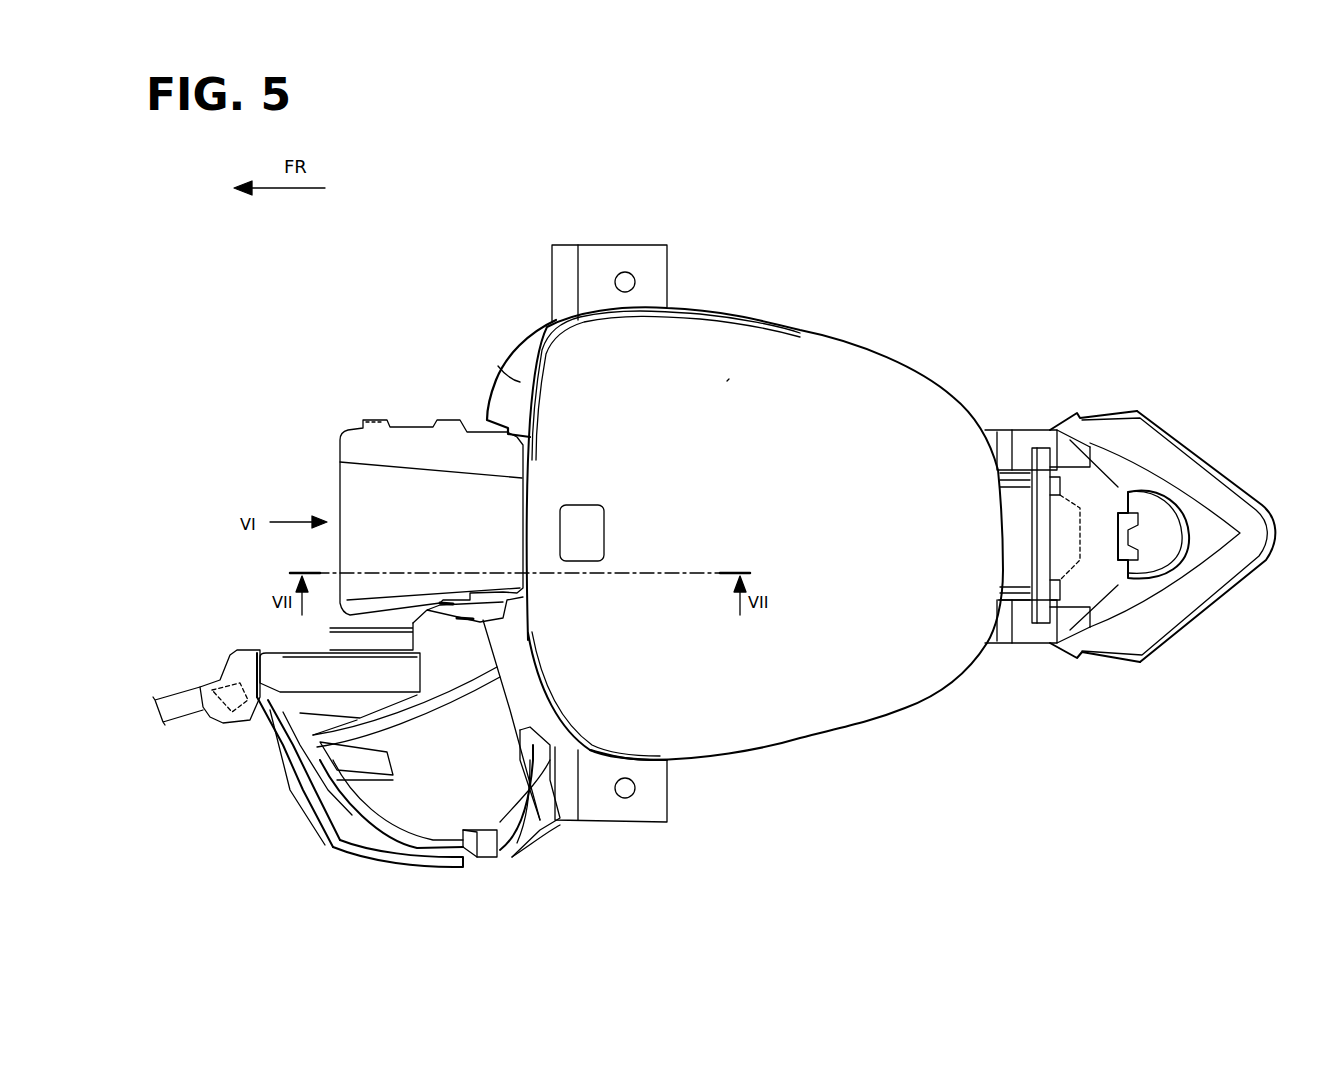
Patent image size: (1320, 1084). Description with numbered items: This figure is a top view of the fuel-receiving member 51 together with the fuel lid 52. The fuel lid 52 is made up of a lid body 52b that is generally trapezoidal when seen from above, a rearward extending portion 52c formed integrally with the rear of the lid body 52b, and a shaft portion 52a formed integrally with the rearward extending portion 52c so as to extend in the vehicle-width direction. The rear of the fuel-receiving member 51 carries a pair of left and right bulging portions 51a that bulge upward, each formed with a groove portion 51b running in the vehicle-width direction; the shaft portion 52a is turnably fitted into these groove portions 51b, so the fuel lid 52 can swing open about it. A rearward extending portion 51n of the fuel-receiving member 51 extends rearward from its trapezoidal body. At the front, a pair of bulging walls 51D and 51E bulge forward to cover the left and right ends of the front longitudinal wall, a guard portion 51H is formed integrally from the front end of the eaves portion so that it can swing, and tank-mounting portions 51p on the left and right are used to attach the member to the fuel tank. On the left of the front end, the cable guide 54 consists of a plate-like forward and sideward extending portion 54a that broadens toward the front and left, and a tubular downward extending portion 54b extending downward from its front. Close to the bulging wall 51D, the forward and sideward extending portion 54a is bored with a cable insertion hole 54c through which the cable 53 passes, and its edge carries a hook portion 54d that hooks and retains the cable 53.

The fuel-receiving member 51 is at (527, 335).
The tank-mounting portion 51p is at (598, 268).
The bulging wall 51E is at (512, 380).
The guard portion 51H is at (327, 490).
The bulging wall 51D is at (508, 642).
The bulging portion 51a is at (1021, 422).
The groove portion 51b is at (1048, 468).
The rearward extending portion 51n is at (1090, 430).
The fuel lid 52 is at (830, 405).
The lid body 52b is at (728, 380).
The rearward extending portion 52c is at (1075, 512).
The shaft portion 52a is at (1045, 540).
The cable 53 is at (362, 862).
The cable guide 54 is at (302, 808).
The forward and sideward extending portion 54a is at (434, 815).
The downward extending portion 54b is at (248, 735).
The cable insertion hole 54c is at (535, 830).
The hook portion 54d is at (488, 840).